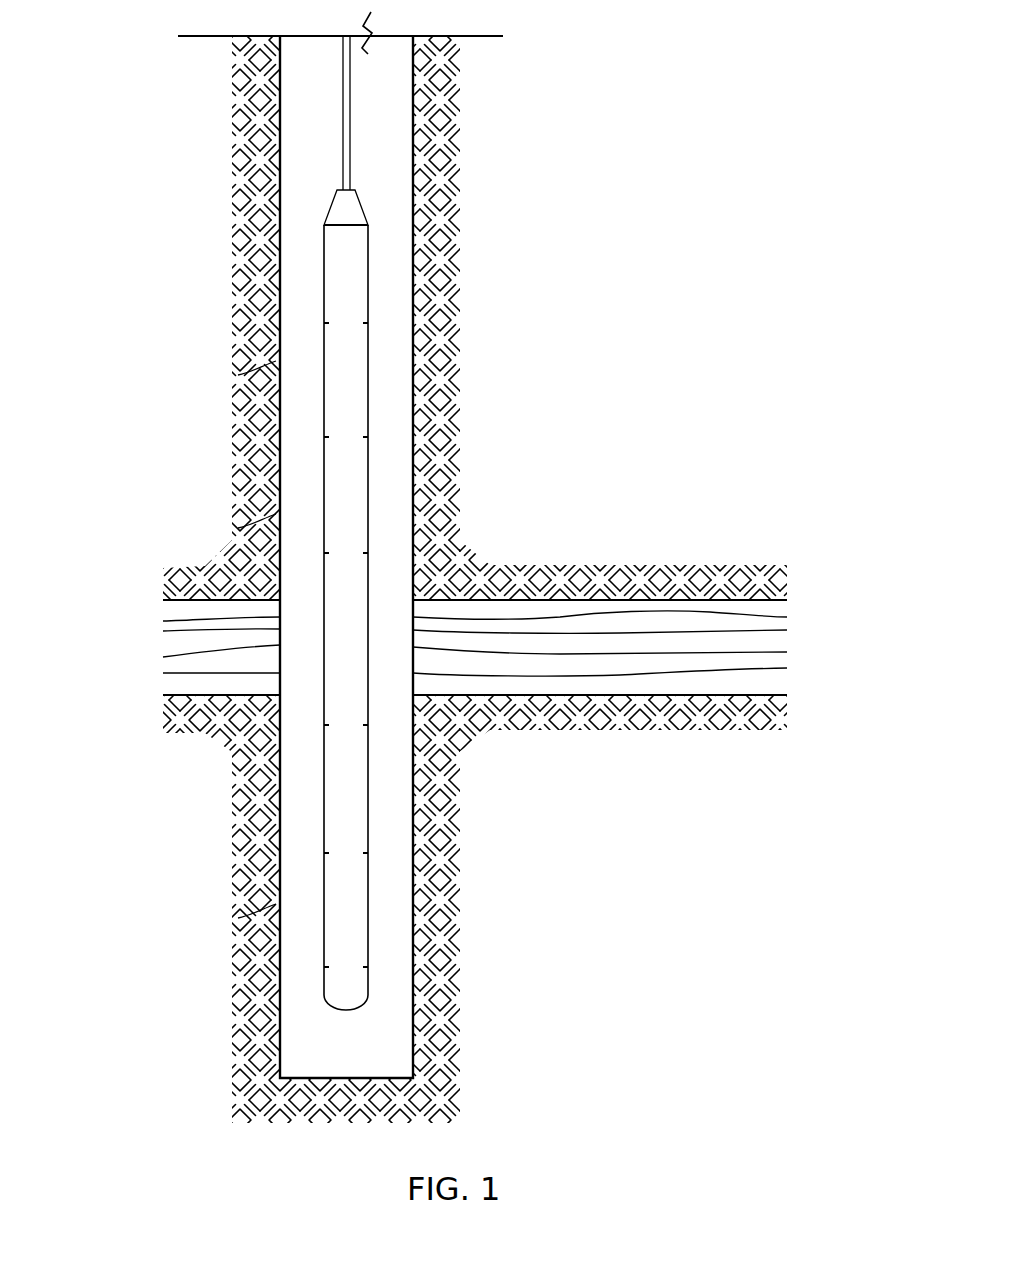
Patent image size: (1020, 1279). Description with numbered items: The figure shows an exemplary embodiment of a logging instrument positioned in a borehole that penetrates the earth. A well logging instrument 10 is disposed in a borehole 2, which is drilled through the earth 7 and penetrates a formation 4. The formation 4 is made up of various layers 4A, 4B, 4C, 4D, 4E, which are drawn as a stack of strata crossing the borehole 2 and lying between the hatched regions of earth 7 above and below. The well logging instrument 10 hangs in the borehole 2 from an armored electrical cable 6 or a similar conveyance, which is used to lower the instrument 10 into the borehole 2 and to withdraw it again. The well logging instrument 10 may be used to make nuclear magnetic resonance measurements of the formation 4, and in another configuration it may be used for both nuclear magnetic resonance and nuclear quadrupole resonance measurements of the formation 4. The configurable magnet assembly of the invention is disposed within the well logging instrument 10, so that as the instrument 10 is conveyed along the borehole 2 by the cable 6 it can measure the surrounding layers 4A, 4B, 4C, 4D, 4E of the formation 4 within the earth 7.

The borehole 2 is at (395, 107).
The formation 4 is at (472, 653).
The layer 4A is at (790, 600).
The layer 4B is at (787, 622).
The layer 4C is at (787, 640).
The layer 4D is at (787, 660).
The layer 4E is at (787, 685).
The armored electrical cable 6 is at (343, 115).
The earth 7 is at (440, 920).
The well logging instrument 10 is at (382, 297).